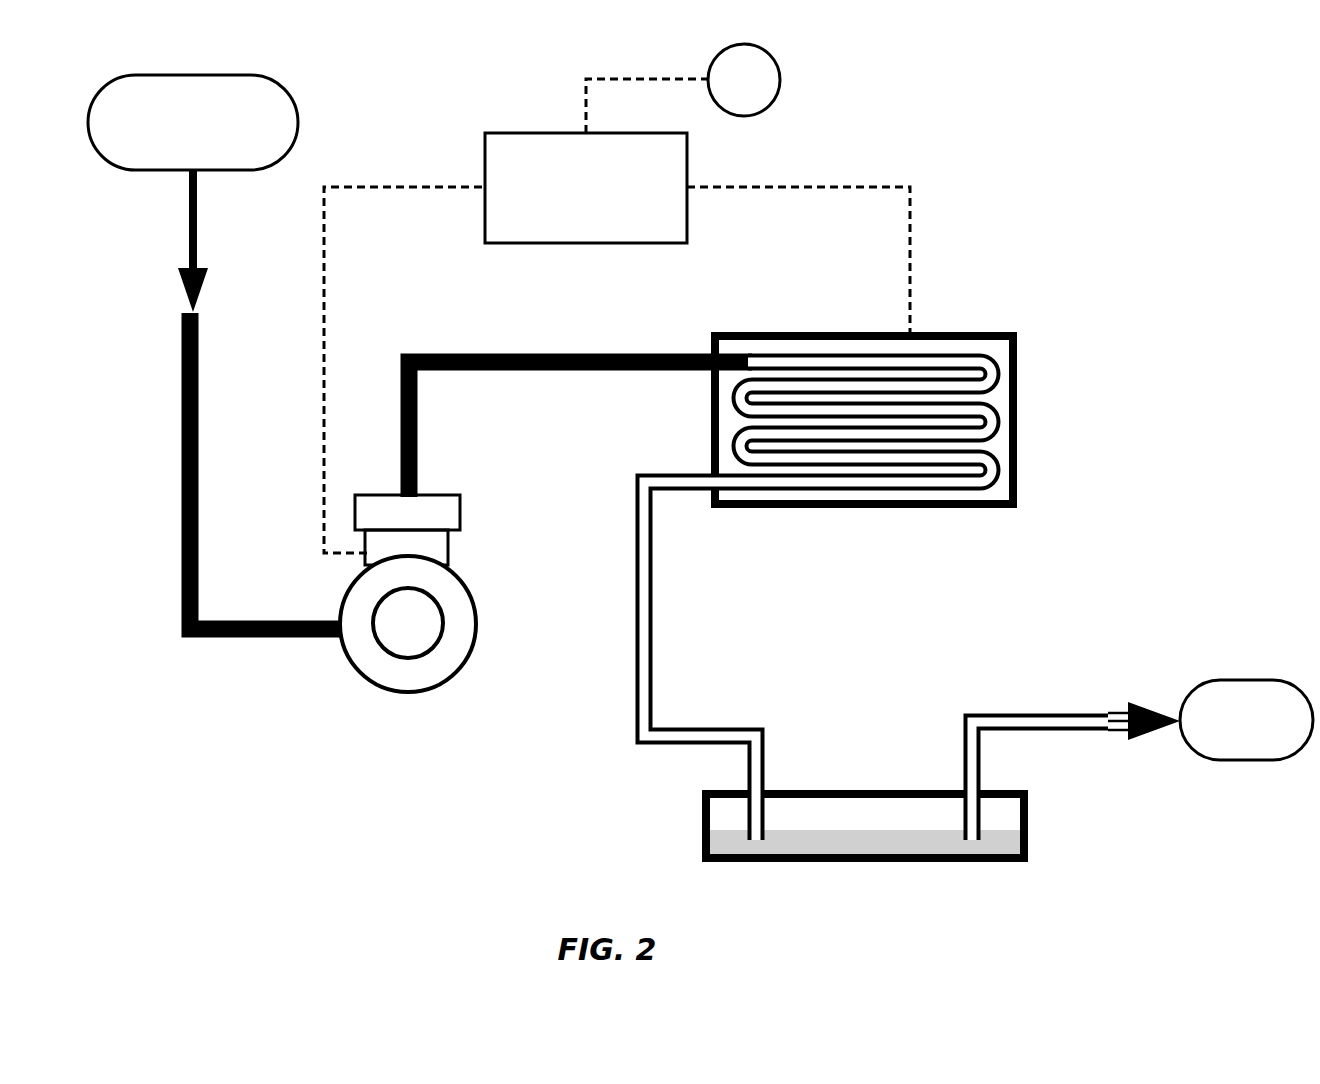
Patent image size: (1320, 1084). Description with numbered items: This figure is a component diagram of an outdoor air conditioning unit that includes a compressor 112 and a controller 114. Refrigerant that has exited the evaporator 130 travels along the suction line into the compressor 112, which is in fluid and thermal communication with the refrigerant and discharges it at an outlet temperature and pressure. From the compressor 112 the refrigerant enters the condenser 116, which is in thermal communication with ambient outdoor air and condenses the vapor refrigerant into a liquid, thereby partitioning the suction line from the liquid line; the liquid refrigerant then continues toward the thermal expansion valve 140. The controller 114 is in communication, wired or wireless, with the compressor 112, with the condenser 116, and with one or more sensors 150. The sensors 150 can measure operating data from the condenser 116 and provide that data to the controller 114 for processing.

The evaporator 130 is at (172, 163).
The controller 114 is at (565, 215).
The sensors 150 is at (723, 93).
The compressor 112 is at (432, 692).
The condenser 116 is at (1022, 350).
The thermal expansion valve 140 is at (1226, 747).